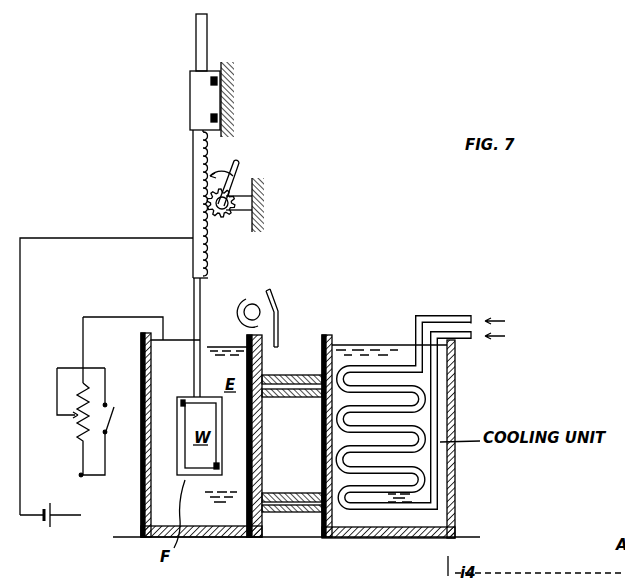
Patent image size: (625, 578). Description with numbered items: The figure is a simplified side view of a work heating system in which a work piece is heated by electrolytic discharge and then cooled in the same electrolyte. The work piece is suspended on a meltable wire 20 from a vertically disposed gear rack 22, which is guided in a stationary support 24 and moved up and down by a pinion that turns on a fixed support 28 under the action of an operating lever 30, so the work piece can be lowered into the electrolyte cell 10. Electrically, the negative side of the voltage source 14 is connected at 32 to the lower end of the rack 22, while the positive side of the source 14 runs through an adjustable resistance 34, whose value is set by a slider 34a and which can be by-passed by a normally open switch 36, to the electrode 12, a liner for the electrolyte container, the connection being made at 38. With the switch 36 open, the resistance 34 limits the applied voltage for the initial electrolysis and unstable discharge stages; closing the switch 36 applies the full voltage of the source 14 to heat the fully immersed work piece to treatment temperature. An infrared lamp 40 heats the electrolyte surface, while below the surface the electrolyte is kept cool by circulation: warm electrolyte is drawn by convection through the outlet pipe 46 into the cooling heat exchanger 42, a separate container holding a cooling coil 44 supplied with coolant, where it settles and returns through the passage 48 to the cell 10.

The electrolyte cell 10 is at (262, 452).
The electrode 12 is at (141, 491).
The voltage source 14 is at (43, 519).
The meltable wire 20 is at (194, 296).
The gear rack 22 is at (193, 154).
The stationary support 24 is at (190, 90).
The fixed support 28 is at (264, 206).
The operating lever 30 is at (238, 162).
The connection to lower end of rack 32 is at (190, 242).
The adjustable resistance 34 is at (76, 446).
The slider 34a is at (78, 418).
The switch 36 is at (107, 421).
The connection to electrode 38 is at (156, 348).
The infrared lamp 40 is at (277, 303).
The cooling heat exchanger 42 is at (363, 540).
The cooling coil 44 is at (421, 396).
The outlet pipe 46 is at (291, 376).
The passage 48 is at (292, 516).